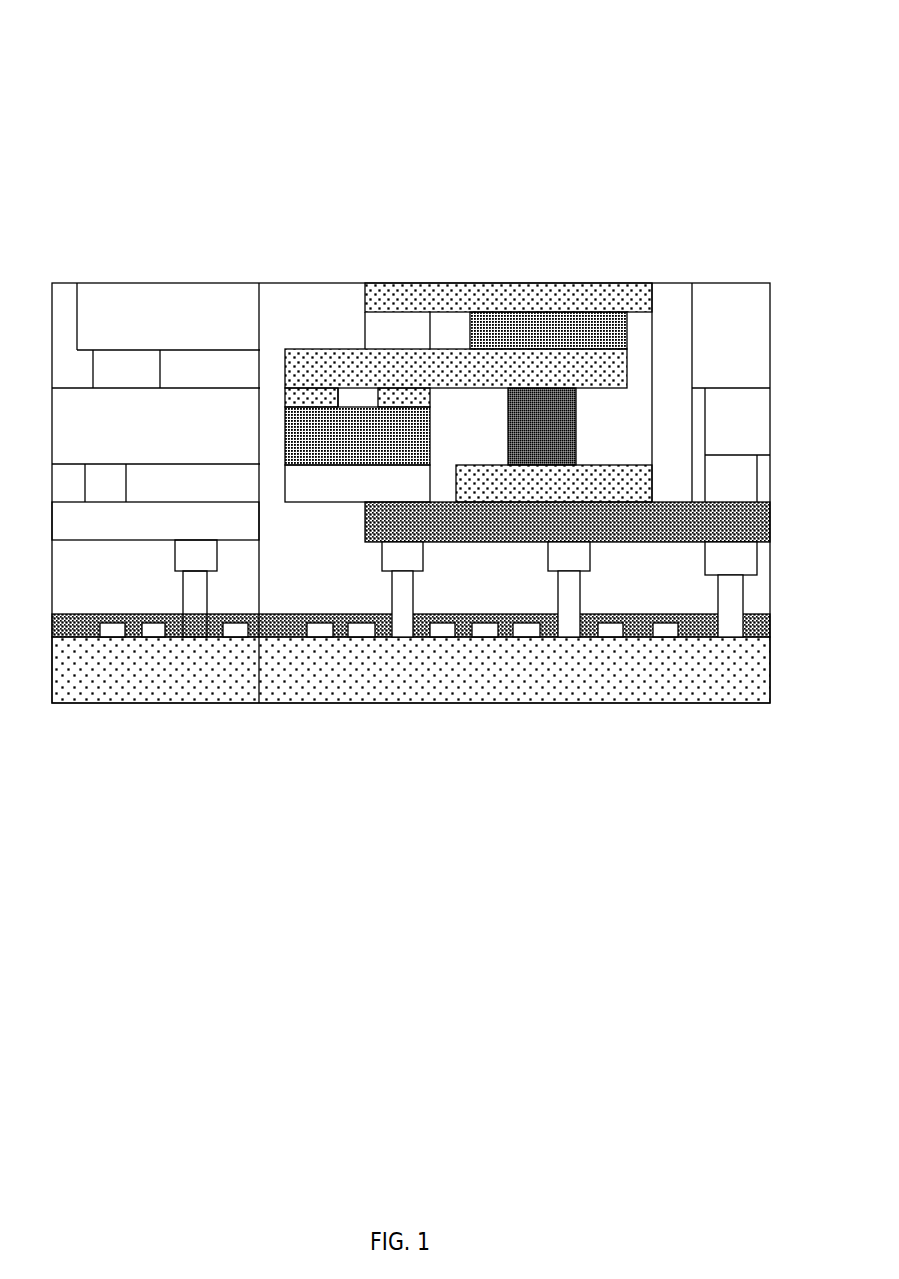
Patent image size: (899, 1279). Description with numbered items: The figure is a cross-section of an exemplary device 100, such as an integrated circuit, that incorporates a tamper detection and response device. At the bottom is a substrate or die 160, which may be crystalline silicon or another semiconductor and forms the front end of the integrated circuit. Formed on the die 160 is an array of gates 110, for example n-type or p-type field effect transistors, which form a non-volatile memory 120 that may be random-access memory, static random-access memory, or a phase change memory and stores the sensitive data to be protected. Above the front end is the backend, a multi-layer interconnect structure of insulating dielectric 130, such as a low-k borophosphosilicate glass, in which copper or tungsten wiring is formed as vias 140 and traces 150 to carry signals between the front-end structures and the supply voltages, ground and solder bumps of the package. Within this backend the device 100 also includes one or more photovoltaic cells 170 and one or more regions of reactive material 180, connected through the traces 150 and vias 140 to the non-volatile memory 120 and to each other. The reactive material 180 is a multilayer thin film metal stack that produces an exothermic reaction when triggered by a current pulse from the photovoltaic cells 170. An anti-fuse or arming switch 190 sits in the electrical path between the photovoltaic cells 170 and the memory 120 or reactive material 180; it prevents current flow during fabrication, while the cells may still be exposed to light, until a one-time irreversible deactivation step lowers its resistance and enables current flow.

The device 100 is at (77, 48).
The gates 110 is at (402, 566).
The non-volatile memory 120 is at (668, 531).
The dielectric 130 is at (337, 578).
The vias 140 is at (190, 330).
The traces 150 is at (520, 306).
The die 160 is at (527, 692).
The photovoltaic cells 170 is at (385, 448).
The reactive material 180 is at (578, 499).
The arming switch 190 is at (558, 446).